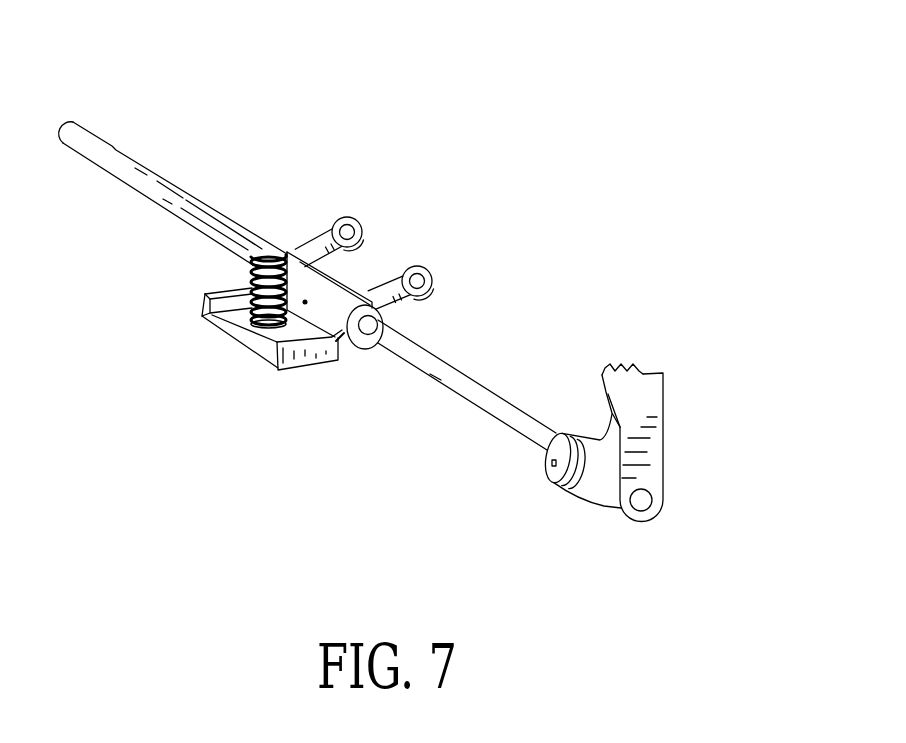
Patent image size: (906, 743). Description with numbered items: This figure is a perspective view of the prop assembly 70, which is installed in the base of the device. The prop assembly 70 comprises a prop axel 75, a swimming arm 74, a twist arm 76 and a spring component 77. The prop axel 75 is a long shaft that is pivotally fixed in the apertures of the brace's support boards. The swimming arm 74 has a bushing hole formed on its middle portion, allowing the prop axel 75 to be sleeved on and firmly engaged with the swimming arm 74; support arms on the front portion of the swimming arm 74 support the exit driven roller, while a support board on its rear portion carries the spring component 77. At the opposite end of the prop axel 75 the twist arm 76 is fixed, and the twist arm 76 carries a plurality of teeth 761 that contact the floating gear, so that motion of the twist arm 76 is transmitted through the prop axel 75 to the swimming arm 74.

The prop assembly 70 is at (528, 95).
The swimming arm 74 is at (343, 352).
The prop axel 75 is at (510, 418).
The twist arm 76 is at (647, 473).
The teeth 761 is at (637, 368).
The spring component 77 is at (210, 322).